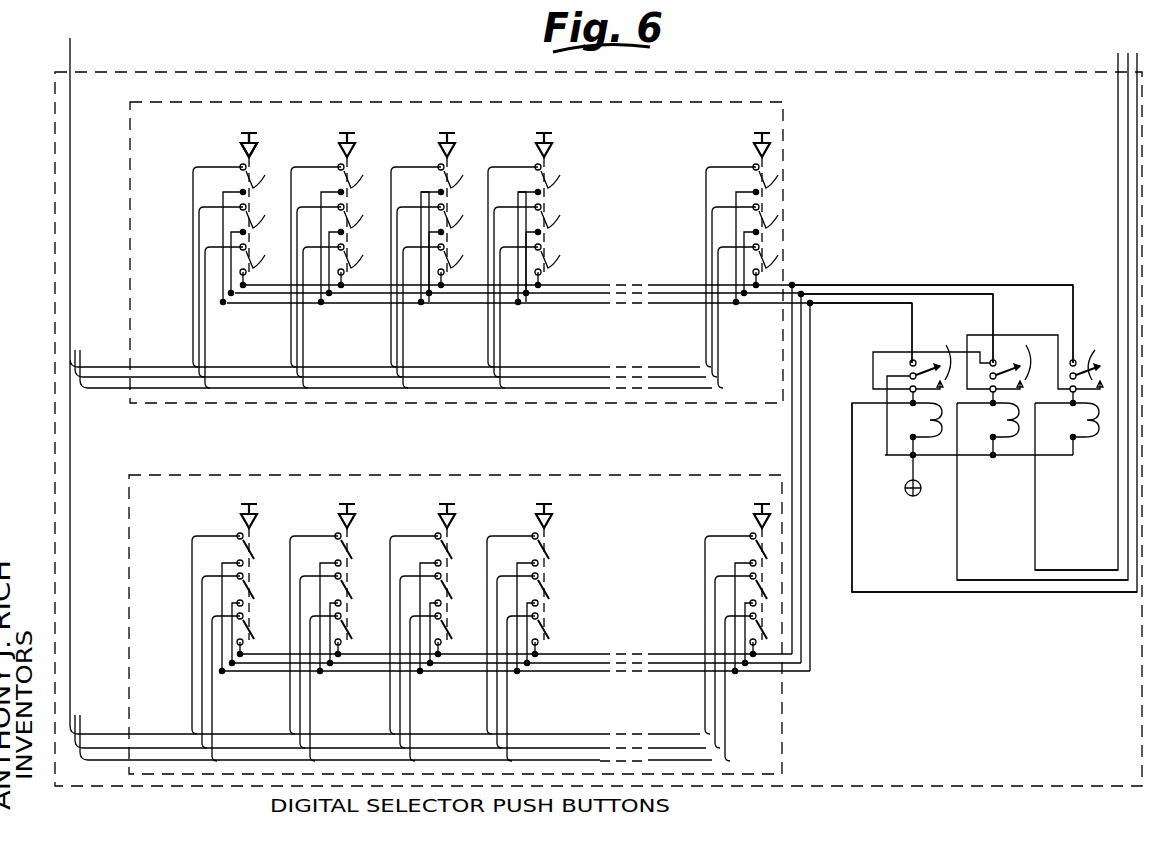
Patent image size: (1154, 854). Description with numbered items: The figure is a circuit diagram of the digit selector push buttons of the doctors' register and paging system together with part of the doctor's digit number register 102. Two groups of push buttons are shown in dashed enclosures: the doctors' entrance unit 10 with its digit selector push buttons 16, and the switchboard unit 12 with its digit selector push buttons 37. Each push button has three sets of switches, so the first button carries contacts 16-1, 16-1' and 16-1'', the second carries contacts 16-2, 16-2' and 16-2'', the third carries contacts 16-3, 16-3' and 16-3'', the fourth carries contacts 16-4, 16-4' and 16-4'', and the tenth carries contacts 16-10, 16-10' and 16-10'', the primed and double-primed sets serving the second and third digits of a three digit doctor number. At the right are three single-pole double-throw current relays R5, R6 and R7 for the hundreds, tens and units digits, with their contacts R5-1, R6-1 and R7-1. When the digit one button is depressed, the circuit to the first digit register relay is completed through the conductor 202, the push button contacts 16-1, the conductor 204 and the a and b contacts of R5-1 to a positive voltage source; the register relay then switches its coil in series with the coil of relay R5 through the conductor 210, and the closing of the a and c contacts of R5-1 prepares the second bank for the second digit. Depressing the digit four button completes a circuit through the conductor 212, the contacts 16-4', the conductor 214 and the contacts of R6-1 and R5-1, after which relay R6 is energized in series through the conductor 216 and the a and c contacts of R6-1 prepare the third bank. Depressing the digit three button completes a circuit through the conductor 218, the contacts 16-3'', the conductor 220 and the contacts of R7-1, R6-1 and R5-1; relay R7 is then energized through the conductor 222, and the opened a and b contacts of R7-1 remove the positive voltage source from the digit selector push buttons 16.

The doctors' entrance unit 10 is at (456, 252).
The switchboard unit 12 is at (455, 624).
The digit selector push buttons 16 is at (236, 140).
The digit selector push buttons 37 is at (224, 514).
The conductor 202 is at (210, 166).
The conductor 218 is at (407, 247).
The conductor 212 is at (508, 212).
The doctor's digit number register 102 is at (966, 286).
The conductor 204 is at (912, 325).
The conductor 214 is at (993, 318).
The conductor 220 is at (1073, 312).
The conductor 210 is at (872, 592).
The conductor 216 is at (967, 580).
The conductor 222 is at (1047, 570).
The current relay R5 is at (913, 444).
The current relay R6 is at (988, 425).
The current relay R7 is at (1067, 423).
The contacts of relay R5 R5-1 is at (931, 393).
The contacts of relay R6 R6-1 is at (1018, 363).
The contacts of relay R7 R7-1 is at (1091, 364).
The push button contacts 16-1 is at (267, 170).
The push button contacts 16-1' is at (268, 210).
The push button contacts 16-1'' is at (270, 250).
The push button contacts 16-2 is at (365, 170).
The push button contacts 16-2' is at (366, 210).
The push button contacts 16-2'' is at (368, 250).
The push button contacts 16-3 is at (465, 170).
The push button contacts 16-3' is at (466, 210).
The push button contacts 16-3'' is at (468, 250).
The push button contacts 16-4 is at (563, 170).
The push button contacts 16-4' is at (564, 210).
The push button contacts 16-4'' is at (566, 250).
The push button contacts 16-10 is at (798, 176).
The push button contacts 16-10' is at (799, 215).
The push button contacts 16-10'' is at (799, 252).